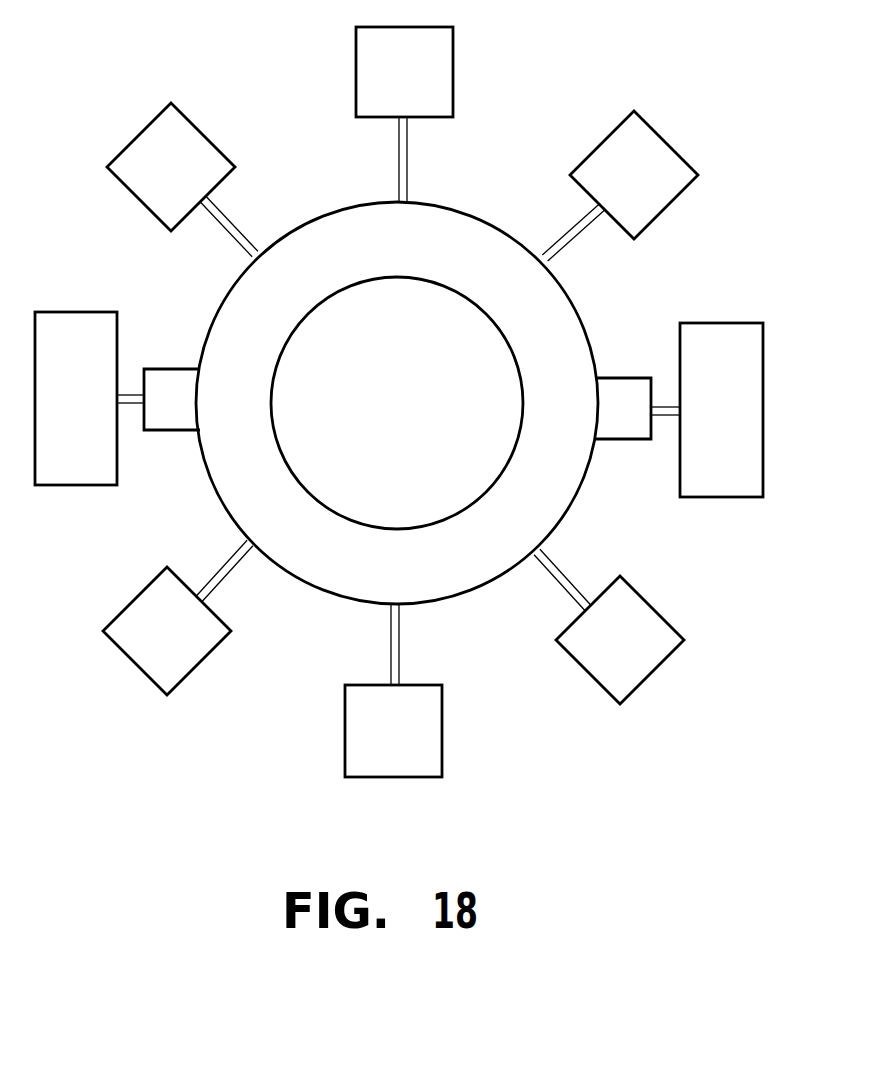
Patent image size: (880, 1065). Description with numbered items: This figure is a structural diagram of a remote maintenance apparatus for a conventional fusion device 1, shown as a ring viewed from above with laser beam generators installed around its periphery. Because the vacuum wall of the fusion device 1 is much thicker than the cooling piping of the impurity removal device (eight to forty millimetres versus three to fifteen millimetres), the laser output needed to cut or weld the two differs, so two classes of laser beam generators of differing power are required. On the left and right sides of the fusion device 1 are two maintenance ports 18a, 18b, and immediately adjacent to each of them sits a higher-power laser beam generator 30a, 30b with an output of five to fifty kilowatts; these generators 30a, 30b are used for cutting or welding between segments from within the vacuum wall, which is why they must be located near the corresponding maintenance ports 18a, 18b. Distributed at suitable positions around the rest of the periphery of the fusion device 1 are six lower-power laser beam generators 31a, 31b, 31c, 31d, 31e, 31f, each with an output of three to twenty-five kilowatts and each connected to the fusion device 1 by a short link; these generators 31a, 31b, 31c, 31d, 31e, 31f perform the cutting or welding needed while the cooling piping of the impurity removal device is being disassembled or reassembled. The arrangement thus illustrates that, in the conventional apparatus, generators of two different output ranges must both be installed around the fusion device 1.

The fusion device 1 is at (577, 300).
The maintenance port 18a is at (168, 430).
The maintenance port 18b is at (622, 439).
The laser beam generator 30a is at (70, 485).
The laser beam generator 30b is at (718, 497).
The laser beam generator 31a is at (453, 62).
The laser beam generator 31b is at (196, 122).
The laser beam generator 31c is at (205, 663).
The laser beam generator 31d is at (387, 777).
The laser beam generator 31e is at (653, 672).
The laser beam generator 31f is at (655, 127).